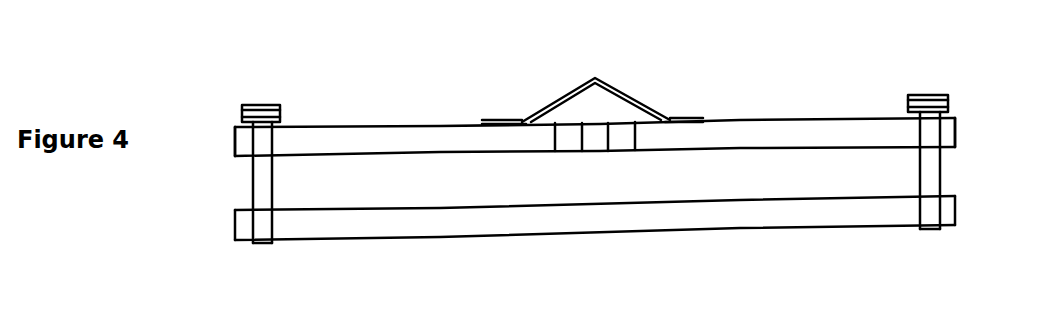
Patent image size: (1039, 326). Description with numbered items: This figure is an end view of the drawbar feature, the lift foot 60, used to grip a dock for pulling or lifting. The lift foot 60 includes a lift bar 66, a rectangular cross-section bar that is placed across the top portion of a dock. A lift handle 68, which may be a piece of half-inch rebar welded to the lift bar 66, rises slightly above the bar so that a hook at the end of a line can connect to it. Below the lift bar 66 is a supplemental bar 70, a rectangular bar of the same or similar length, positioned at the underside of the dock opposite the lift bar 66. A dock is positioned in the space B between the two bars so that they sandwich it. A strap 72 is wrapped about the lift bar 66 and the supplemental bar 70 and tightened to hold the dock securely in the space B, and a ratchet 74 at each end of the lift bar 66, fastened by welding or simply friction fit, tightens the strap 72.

The lift foot 60 is at (226, 45).
The lift bar 66 is at (347, 135).
The lift handle 68 is at (645, 102).
The supplemental bar 70 is at (855, 212).
The strap 72 is at (262, 186).
The ratchet 74 is at (928, 102).
The space B is at (425, 182).